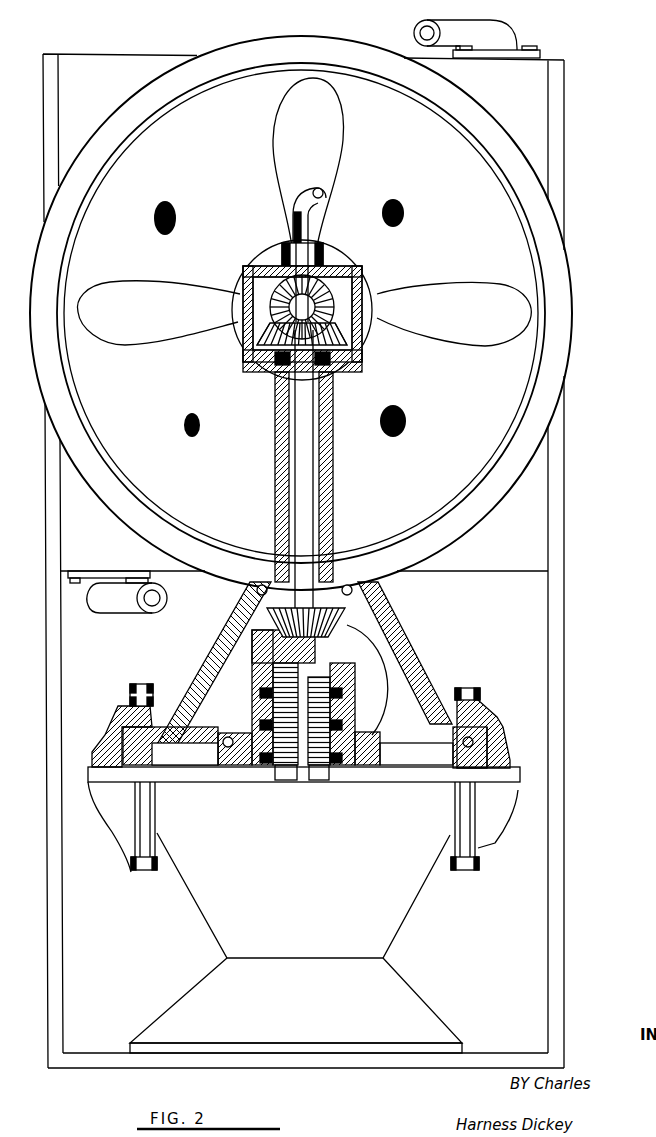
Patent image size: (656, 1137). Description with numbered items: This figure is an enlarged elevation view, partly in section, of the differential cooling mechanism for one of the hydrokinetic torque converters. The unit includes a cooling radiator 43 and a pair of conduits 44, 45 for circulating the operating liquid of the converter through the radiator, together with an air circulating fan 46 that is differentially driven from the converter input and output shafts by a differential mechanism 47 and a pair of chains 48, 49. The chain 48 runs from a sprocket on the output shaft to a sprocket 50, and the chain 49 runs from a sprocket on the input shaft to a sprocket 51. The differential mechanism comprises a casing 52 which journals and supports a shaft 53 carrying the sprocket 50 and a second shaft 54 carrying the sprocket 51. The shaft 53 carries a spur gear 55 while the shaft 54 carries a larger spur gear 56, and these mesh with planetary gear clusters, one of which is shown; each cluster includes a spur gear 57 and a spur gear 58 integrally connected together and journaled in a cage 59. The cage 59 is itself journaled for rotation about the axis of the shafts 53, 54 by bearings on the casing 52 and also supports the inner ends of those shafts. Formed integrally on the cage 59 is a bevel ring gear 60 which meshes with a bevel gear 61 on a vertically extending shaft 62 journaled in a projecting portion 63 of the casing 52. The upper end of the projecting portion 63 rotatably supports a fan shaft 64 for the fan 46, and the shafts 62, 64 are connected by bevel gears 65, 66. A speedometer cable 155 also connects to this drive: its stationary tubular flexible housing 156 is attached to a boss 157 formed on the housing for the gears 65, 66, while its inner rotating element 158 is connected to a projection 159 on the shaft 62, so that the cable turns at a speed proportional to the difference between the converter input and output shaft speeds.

The cooling radiator 43 is at (505, 222).
The conduit 44 is at (108, 606).
The conduit 45 is at (504, 33).
The air circulating fan 46 is at (508, 268).
The differential mechanism 47 is at (375, 915).
The chain 48 is at (133, 872).
The chain 49 is at (478, 870).
The sprocket 50 is at (132, 688).
The sprocket 51 is at (478, 693).
The casing 52 is at (218, 918).
The shaft 53 is at (197, 743).
The second shaft 54 is at (514, 768).
The spur gear 55 is at (285, 768).
The larger spur gear 56 is at (320, 768).
The spur gear 57 is at (253, 678).
The spur gear 58 is at (320, 677).
The cage 59 is at (253, 644).
The bevel ring gear 60 is at (222, 630).
The bevel gear 61 is at (350, 623).
The vertically extending shaft 62 is at (328, 450).
The projecting portion 63 is at (335, 396).
The fan shaft 64 is at (332, 293).
The bevel gear 65 is at (258, 341).
The bevel gear 66 is at (333, 262).
The speedometer cable 155 is at (290, 210).
The tubular flexible housing 156 is at (322, 207).
The boss 157 is at (282, 261).
The inner rotating element 158 is at (328, 192).
The projection 159 is at (245, 278).